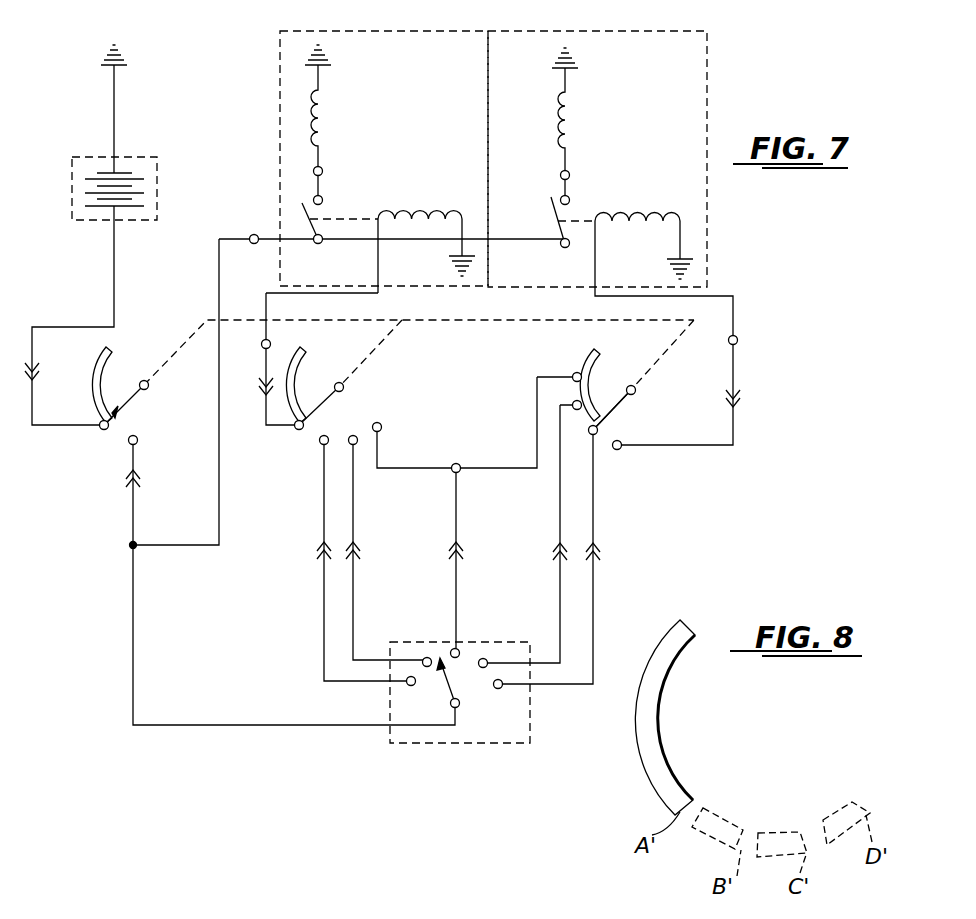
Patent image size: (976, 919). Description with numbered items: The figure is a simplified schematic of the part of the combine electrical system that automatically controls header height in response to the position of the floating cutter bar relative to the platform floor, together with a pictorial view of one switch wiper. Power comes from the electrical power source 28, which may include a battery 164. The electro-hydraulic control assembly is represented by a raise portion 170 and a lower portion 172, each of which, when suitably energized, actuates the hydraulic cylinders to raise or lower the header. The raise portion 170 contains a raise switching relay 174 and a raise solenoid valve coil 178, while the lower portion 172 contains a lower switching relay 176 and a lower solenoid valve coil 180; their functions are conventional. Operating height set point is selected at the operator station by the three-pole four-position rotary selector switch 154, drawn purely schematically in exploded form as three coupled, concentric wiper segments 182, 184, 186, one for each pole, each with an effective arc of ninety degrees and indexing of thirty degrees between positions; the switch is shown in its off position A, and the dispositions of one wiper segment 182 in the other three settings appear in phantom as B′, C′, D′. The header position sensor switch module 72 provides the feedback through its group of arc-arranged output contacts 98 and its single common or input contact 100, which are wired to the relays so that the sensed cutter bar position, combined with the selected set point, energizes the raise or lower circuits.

In FIG. 7, the electrical power source 28 is at (157, 183).
In FIG. 7, the battery 164 is at (88, 208).
In FIG. 7, the raise portion 170 is at (280, 47).
In FIG. 7, the lower portion 172 is at (707, 57).
In FIG. 7, the raise switching relay 174 is at (423, 212).
In FIG. 7, the lower switching relay 176 is at (653, 178).
In FIG. 7, the raise solenoid valve coil 178 is at (305, 142).
In FIG. 7, the lower solenoid valve coil 180 is at (557, 146).
In FIG. 7, the wiper segment 182 is at (92, 393).
In FIG. 8, the wiper segment 182 is at (662, 718).
In FIG. 7, the wiper segment 184 is at (294, 352).
In FIG. 7, the wiper segment 186 is at (590, 357).
In FIG. 7, the rotary selector switch 154 is at (638, 386).
In FIG. 7, the header position sensor switch module 72 is at (390, 744).
In FIG. 7, the output contacts 98 is at (418, 653).
In FIG. 7, the common contact 100 is at (450, 703).